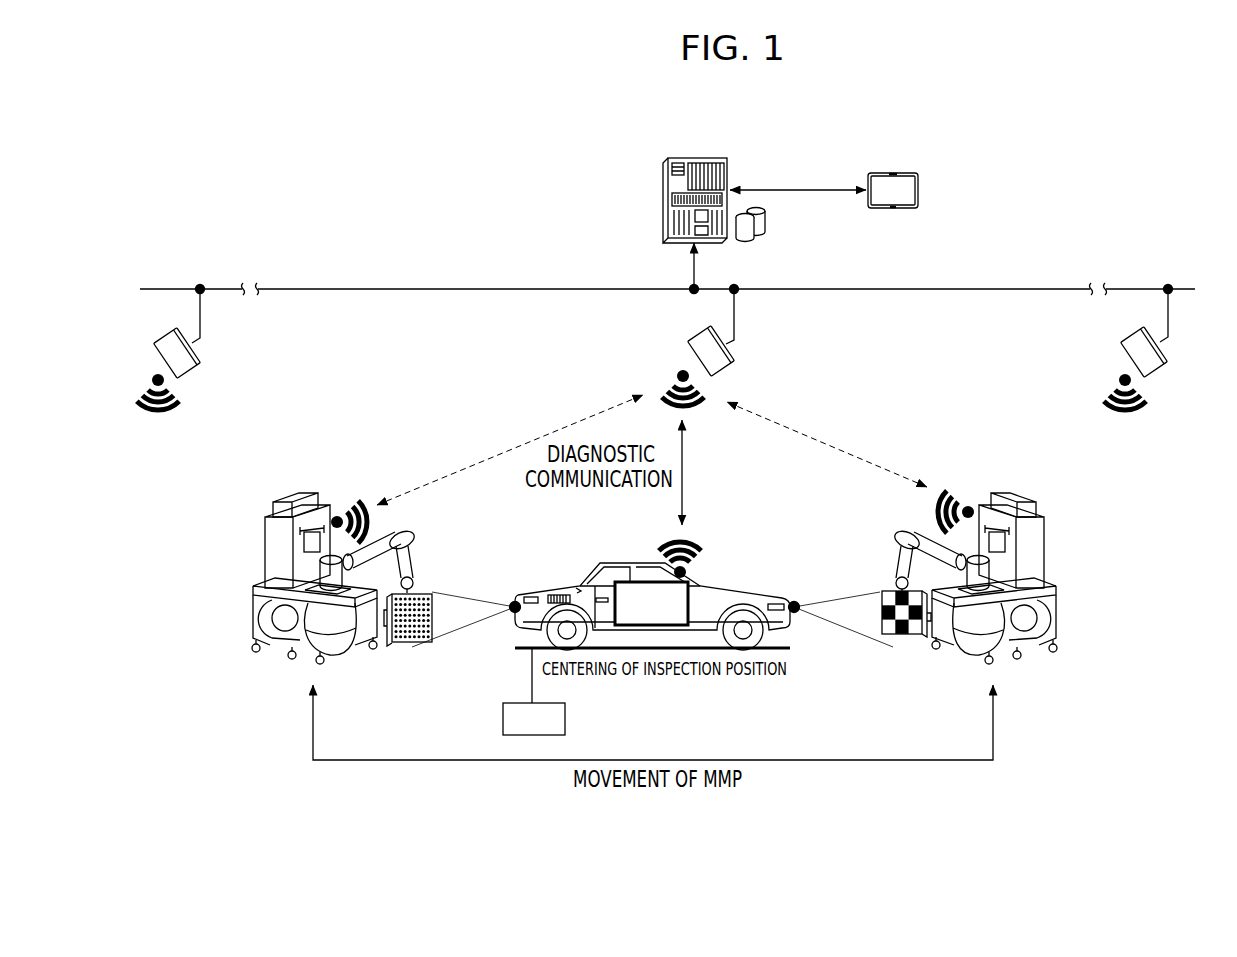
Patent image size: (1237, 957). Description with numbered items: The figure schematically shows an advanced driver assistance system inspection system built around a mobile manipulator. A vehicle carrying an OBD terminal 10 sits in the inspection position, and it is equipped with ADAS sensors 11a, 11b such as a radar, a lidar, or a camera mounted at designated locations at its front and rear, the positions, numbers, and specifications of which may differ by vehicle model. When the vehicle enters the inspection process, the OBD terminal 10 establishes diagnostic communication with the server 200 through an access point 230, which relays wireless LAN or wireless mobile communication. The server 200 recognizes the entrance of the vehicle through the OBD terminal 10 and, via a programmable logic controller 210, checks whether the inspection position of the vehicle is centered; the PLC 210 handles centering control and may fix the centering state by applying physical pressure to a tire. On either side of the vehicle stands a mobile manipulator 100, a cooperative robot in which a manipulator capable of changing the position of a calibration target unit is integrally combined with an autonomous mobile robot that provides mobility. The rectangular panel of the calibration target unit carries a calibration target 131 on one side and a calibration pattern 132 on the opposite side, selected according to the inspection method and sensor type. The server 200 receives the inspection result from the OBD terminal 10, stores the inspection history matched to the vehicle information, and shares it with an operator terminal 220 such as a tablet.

The OBD terminal 10 is at (623, 582).
The ADAS sensor 11a is at (512, 615).
The ADAS sensor 11b is at (797, 615).
The mobile manipulator (MMP) 100 is at (262, 518).
The calibration target 131 is at (412, 645).
The calibration pattern 132 is at (900, 637).
The server 200 is at (695, 157).
The programmable logic controller (PLC) 210 is at (565, 720).
The operator terminal 220 is at (897, 173).
The access point (AP) 230 is at (732, 357).